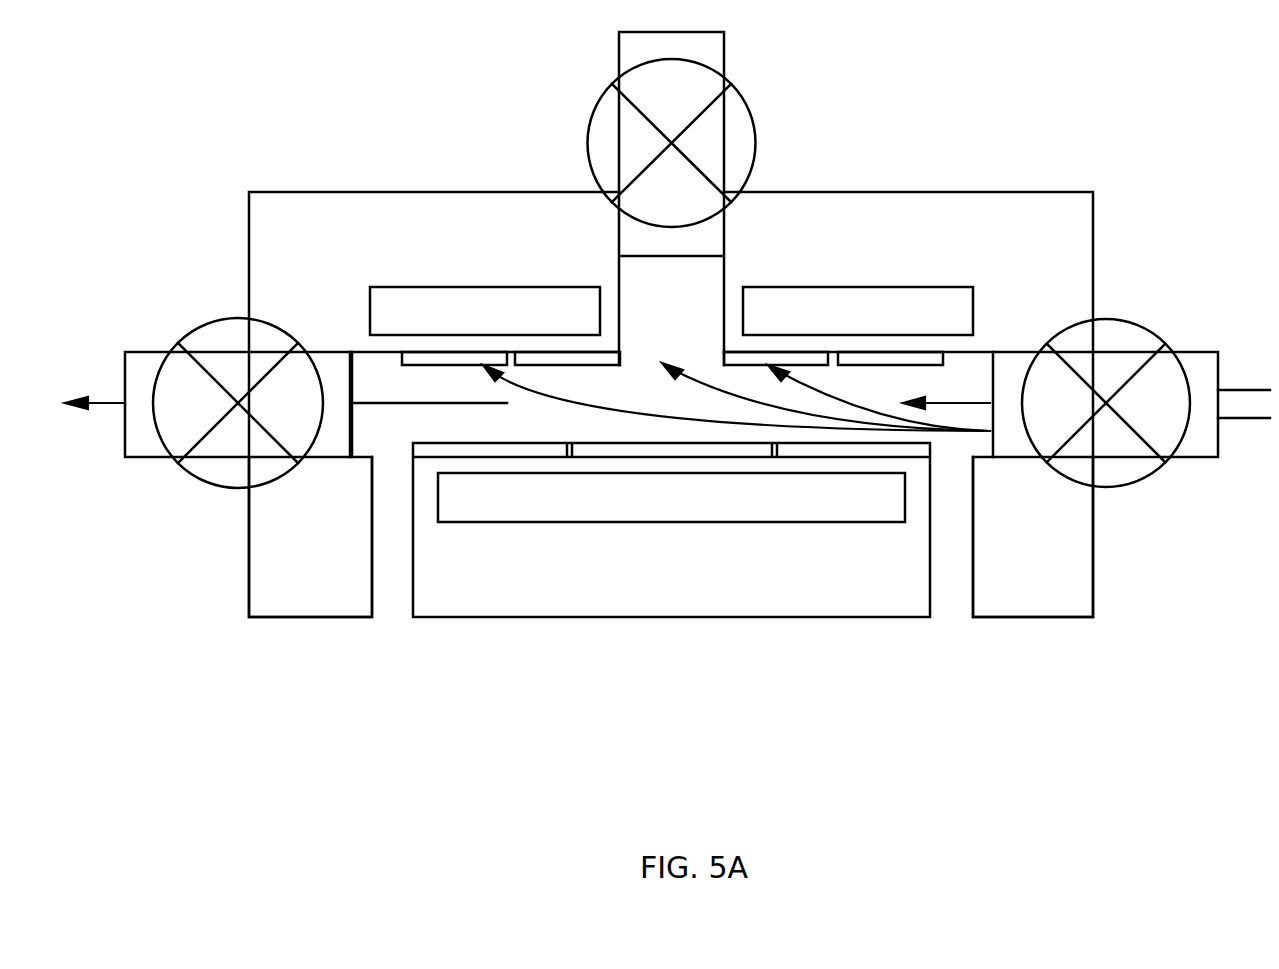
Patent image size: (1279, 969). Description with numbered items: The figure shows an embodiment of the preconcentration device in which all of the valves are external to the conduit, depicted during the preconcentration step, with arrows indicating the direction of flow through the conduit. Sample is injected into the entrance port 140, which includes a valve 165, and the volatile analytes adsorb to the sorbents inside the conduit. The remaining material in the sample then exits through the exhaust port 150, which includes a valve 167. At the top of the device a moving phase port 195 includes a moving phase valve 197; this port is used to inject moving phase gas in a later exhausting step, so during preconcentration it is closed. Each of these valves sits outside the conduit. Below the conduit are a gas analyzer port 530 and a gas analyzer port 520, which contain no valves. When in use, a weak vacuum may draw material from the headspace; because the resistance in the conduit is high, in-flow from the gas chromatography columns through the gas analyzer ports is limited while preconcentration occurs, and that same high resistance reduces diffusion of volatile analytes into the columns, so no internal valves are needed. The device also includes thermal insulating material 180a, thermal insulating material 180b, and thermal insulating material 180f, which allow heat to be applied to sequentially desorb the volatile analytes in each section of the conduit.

The moving phase valve 197 is at (753, 108).
The moving phase port 195 is at (619, 247).
The valve 167 is at (203, 325).
The exhaust port 150 is at (325, 348).
The entrance port 140 is at (1017, 348).
The valve 165 is at (1138, 322).
The thermal insulating material 180a is at (485, 311).
The thermal insulating material 180b is at (858, 311).
The thermal insulating material 180f is at (671, 497).
The gas analyzer port 530 is at (398, 613).
The gas analyzer port 520 is at (957, 610).